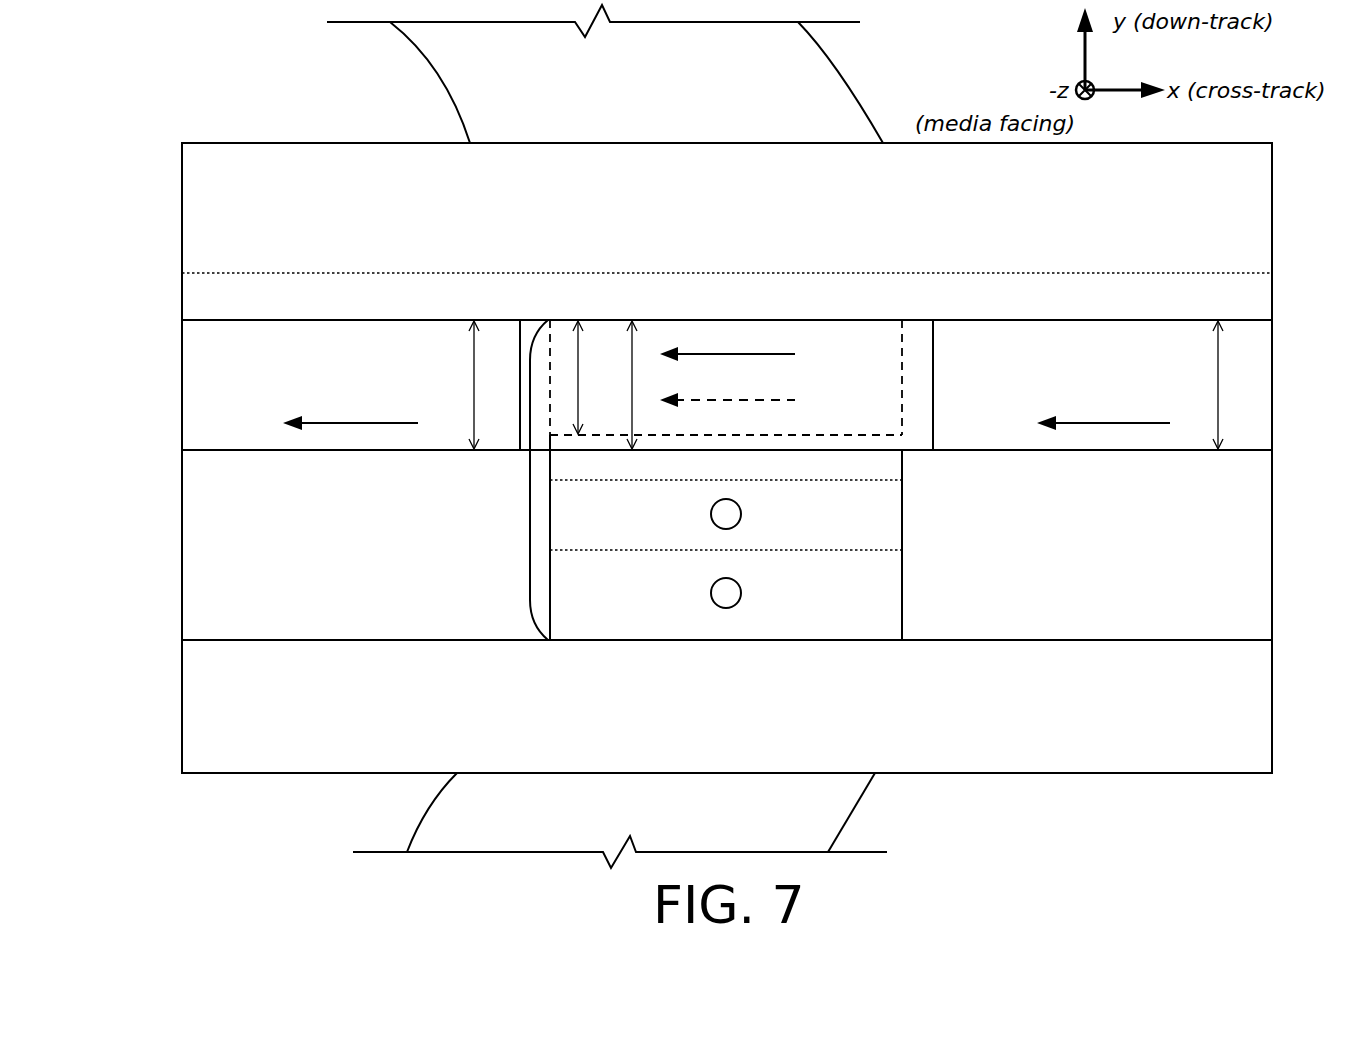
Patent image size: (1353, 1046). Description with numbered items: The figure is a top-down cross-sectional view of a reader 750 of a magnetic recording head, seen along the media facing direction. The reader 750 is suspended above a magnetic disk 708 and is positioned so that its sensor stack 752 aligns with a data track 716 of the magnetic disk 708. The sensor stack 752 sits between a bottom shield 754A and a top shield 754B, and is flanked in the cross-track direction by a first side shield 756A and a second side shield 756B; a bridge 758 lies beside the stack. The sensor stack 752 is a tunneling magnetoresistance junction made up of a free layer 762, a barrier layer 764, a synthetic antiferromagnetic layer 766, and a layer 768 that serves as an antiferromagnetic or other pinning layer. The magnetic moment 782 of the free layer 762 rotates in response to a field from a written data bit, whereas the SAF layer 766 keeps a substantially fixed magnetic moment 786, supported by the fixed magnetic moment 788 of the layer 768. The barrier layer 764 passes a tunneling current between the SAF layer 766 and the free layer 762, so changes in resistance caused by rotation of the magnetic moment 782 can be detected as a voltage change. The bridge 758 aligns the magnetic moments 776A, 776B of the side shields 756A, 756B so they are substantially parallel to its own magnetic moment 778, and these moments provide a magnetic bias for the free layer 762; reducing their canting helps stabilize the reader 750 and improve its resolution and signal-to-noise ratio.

The reader 750 is at (238, 130).
The magnetic disk 708 is at (473, 115).
The data track 716 is at (662, 88).
The top shield 754B is at (760, 223).
The bottom shield 754A is at (760, 724).
The second side shield 756B is at (384, 403).
The first side shield 756A is at (1136, 403).
The magnetic moment of second side shield 776B is at (350, 423).
The magnetic moment of first side shield 776A is at (1110, 423).
The sensor stack 752 is at (527, 480).
The free layer 762 is at (887, 388).
The bridge 758 is at (918, 440).
The magnetic moment of bridge 778 is at (767, 355).
The magnetic moment of free layer 782 is at (775, 401).
The barrier layer 764 is at (893, 470).
The synthetic antiferromagnetic layer 766 is at (893, 520).
The layer 768 is at (893, 583).
The magnetic moment of SAF layer 786 is at (741, 514).
The magnetic moment of layer 768 788 is at (741, 593).